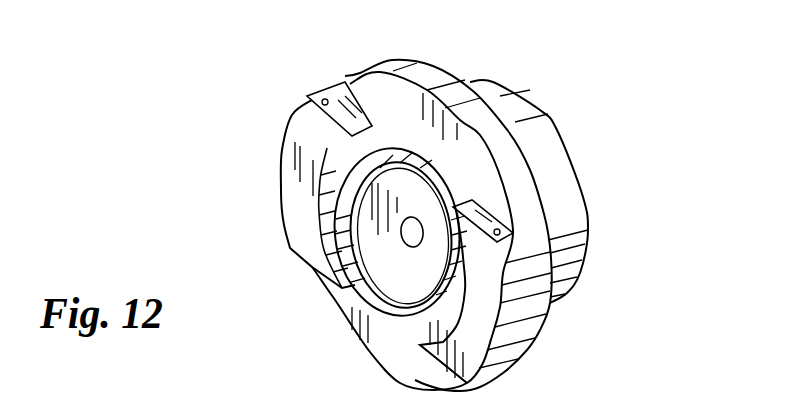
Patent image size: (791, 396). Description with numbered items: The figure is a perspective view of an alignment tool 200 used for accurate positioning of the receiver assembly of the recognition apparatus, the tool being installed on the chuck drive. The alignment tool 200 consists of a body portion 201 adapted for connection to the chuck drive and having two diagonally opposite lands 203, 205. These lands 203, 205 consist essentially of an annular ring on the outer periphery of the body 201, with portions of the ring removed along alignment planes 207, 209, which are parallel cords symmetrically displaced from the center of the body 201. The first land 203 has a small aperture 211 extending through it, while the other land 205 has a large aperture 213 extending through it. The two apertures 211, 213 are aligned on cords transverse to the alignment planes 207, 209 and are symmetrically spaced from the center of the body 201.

The alignment tool 200 is at (560, 103).
The body portion 201 is at (451, 88).
The first land 203 is at (296, 206).
The other land 205 is at (487, 310).
The alignment plane 207 is at (331, 87).
The alignment plane 209 is at (310, 268).
The small aperture 211 is at (308, 95).
The large aperture 213 is at (502, 232).